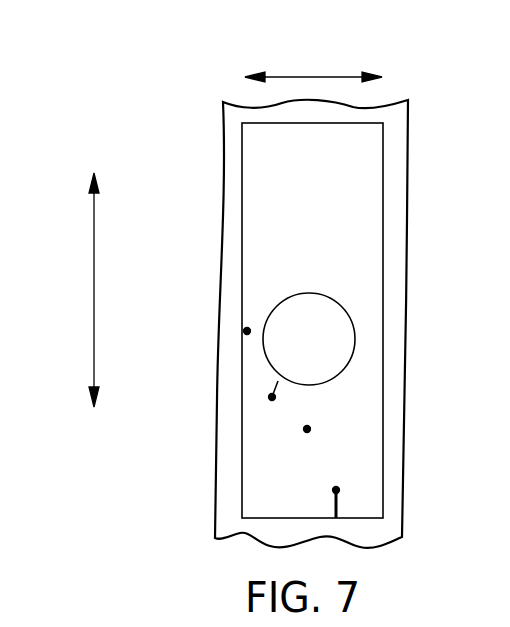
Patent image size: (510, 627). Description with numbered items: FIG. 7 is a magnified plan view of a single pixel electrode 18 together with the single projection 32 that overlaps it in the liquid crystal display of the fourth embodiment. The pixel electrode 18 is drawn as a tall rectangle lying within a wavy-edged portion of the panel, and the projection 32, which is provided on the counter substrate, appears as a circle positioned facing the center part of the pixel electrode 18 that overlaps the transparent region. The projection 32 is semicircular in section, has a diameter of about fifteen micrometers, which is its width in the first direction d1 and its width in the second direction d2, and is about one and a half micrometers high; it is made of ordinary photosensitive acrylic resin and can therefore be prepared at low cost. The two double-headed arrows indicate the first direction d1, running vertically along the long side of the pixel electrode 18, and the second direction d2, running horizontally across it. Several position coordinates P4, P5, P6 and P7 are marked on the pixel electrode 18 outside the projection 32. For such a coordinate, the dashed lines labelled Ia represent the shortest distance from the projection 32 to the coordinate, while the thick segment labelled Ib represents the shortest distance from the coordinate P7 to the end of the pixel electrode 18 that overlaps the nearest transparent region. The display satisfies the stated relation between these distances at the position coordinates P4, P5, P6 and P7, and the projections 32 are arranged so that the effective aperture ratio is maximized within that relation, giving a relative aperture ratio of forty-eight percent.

The pixel electrode 18 is at (370, 200).
The projection 32 is at (350, 325).
The shortest distance la Ia is at (256, 330).
The shortest distance lb Ib is at (340, 505).
The position coordinate P4 is at (247, 331).
The position coordinate P5 is at (272, 397).
The position coordinate P6 is at (307, 429).
The position coordinate P7 is at (336, 490).
The first direction d1 is at (94, 293).
The second direction d2 is at (308, 77).